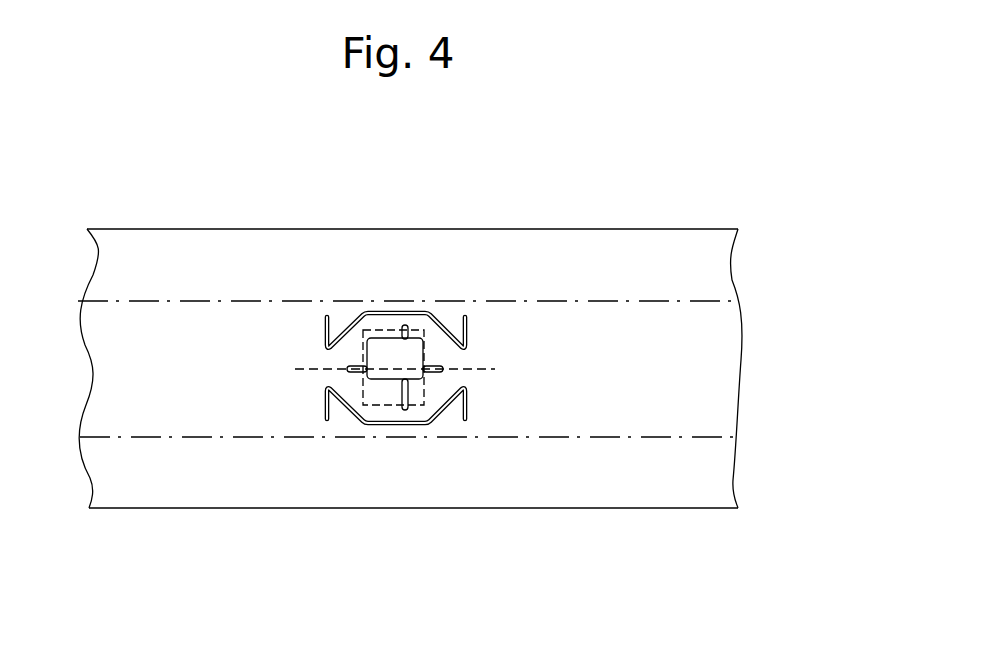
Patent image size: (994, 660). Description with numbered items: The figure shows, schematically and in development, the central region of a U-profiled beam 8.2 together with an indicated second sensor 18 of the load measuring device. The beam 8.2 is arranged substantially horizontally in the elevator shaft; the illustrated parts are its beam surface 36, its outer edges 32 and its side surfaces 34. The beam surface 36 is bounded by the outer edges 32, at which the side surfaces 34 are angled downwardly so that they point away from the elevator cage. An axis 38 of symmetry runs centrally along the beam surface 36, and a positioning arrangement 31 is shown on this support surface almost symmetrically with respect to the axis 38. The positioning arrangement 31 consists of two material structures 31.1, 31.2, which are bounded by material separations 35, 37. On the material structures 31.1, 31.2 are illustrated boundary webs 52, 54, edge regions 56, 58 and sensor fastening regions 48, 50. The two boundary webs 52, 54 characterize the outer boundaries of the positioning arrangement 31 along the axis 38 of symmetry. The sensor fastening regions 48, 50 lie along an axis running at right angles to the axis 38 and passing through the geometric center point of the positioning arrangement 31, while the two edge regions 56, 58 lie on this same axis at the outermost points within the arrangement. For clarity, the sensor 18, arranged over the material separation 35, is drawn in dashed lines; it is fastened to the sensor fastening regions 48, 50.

The beam 8.2 is at (139, 484).
The sensor 18 is at (440, 390).
The positioning arrangement 31 is at (443, 300).
The material structure 31.1 is at (444, 400).
The material structure 31.2 is at (440, 345).
The outer edges 32 is at (713, 300).
The side surfaces 34 is at (652, 268).
The material separation 35 is at (410, 377).
The beam surface 36 is at (703, 368).
The material separation 37 is at (364, 312).
The axis of symmetry 38 is at (325, 318).
The sensor fastening region 48 is at (380, 404).
The sensor fastening region 50 is at (392, 327).
The boundary web 52 is at (316, 382).
The boundary web 54 is at (472, 372).
The edge region 56 is at (399, 430).
The edge region 58 is at (411, 309).